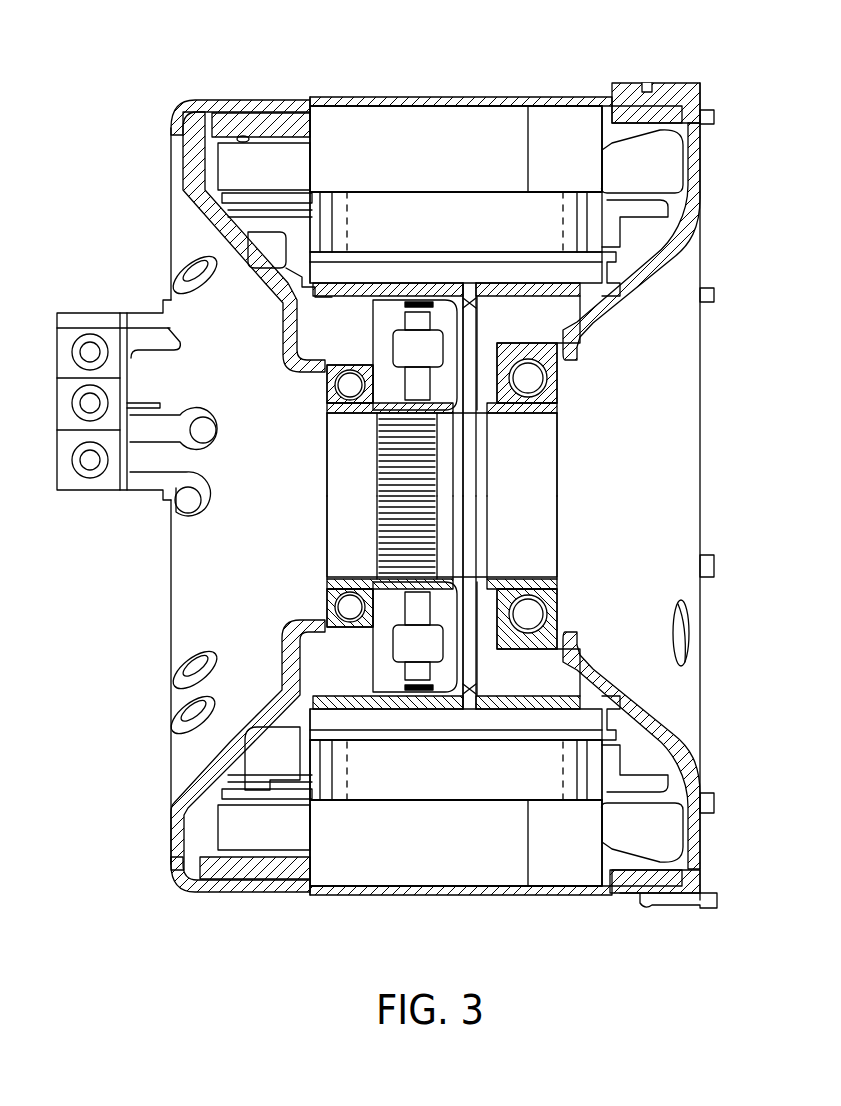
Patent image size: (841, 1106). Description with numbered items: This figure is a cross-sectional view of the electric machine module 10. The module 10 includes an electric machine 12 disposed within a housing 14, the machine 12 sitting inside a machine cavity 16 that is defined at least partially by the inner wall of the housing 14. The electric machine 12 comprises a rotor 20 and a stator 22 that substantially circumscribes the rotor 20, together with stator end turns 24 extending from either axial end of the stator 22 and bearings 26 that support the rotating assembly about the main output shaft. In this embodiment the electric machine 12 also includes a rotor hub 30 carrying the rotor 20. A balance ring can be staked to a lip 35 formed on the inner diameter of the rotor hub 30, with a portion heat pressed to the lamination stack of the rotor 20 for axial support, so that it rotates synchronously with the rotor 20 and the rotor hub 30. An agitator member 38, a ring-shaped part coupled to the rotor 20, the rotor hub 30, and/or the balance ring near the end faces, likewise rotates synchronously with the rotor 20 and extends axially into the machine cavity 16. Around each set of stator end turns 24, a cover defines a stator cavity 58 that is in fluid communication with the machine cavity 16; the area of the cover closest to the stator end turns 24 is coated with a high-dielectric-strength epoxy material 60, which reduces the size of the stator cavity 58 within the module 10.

The electric machine module 10 is at (175, 47).
The electric machine 12 is at (462, 130).
The housing 14 is at (280, 105).
The machine cavity 16 is at (322, 327).
The rotor 20 is at (577, 757).
The stator 22 is at (558, 128).
The stator end turns 24 is at (660, 163).
The bearings 26 is at (345, 395).
The rotor hub 30 is at (540, 665).
The lip 35 is at (580, 325).
The agitator member 38 is at (615, 243).
The stator cavity 58 is at (203, 130).
The epoxy material 60 is at (232, 118).